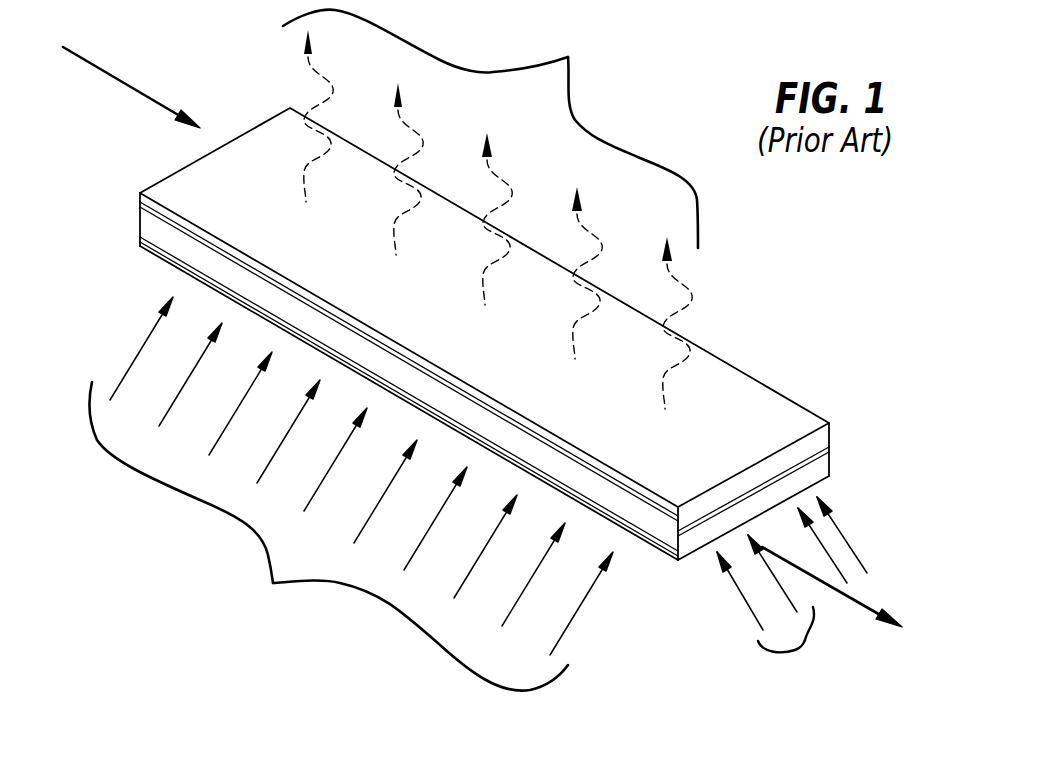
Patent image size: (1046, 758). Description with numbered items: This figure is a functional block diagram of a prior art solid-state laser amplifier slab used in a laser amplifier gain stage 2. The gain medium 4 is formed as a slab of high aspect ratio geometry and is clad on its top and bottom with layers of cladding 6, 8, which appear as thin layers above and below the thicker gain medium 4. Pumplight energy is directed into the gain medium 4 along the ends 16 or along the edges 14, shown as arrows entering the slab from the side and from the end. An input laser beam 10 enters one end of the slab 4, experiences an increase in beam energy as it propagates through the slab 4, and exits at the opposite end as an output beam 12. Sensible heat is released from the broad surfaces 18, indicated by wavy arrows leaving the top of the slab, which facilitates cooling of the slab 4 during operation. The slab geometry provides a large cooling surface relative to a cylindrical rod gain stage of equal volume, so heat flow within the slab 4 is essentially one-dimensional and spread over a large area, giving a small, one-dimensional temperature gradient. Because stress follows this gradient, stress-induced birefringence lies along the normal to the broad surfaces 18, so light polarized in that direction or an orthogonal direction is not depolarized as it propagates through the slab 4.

The laser amplifier gain stage 2 is at (176, 632).
The gain medium 4 is at (140, 219).
The cladding 6 is at (140, 238).
The cladding 8 is at (140, 203).
The input laser beam 10 is at (130, 85).
The output beam 12 is at (858, 602).
The edges 14 is at (351, 494).
The ends 16 is at (848, 540).
The broad surfaces 18 is at (490, 209).